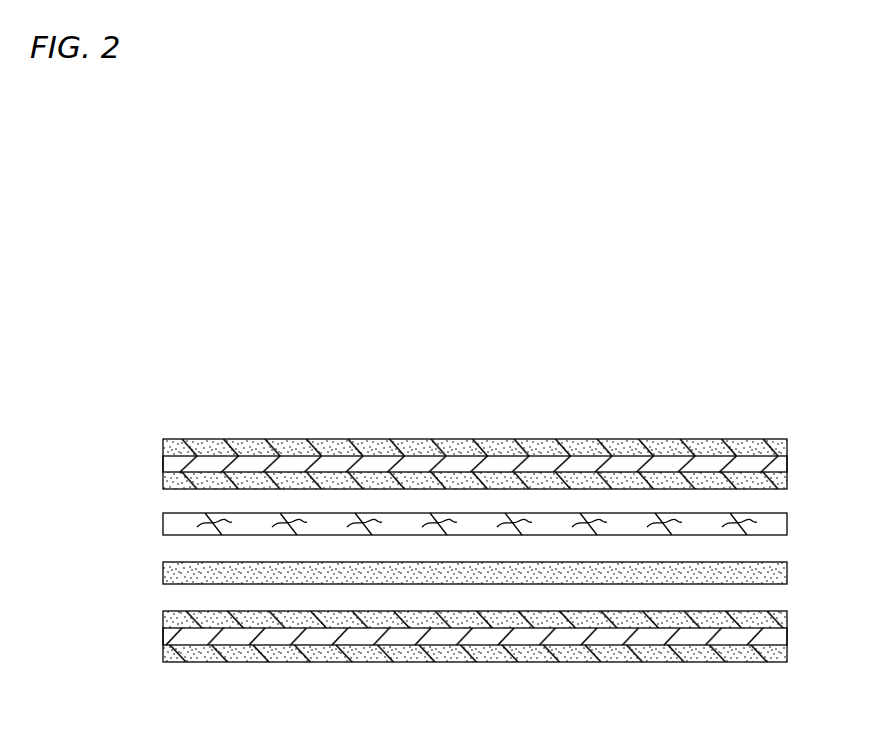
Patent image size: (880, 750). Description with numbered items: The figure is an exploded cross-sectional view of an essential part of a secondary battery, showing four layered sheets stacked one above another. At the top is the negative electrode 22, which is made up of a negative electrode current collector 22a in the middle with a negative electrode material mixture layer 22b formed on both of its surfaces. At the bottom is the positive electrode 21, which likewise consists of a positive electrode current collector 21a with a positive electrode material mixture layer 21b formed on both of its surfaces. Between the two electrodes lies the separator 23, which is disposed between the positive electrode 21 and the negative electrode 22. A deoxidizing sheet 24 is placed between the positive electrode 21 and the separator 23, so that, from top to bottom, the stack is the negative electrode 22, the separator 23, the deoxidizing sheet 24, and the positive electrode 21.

The positive electrode 21 is at (495, 662).
The positive electrode current collector 21a is at (586, 640).
The positive electrode material mixture layer 21b is at (428, 658).
The negative electrode 22 is at (495, 439).
The negative electrode current collector 22a is at (575, 467).
The negative electrode material mixture layer 22b is at (423, 446).
The separator 23 is at (790, 524).
The deoxidizing sheet 24 is at (790, 574).